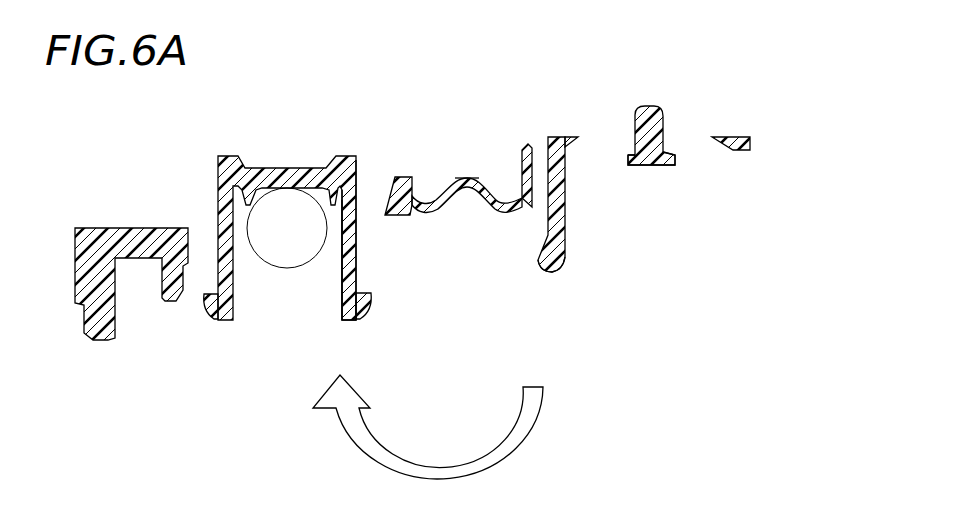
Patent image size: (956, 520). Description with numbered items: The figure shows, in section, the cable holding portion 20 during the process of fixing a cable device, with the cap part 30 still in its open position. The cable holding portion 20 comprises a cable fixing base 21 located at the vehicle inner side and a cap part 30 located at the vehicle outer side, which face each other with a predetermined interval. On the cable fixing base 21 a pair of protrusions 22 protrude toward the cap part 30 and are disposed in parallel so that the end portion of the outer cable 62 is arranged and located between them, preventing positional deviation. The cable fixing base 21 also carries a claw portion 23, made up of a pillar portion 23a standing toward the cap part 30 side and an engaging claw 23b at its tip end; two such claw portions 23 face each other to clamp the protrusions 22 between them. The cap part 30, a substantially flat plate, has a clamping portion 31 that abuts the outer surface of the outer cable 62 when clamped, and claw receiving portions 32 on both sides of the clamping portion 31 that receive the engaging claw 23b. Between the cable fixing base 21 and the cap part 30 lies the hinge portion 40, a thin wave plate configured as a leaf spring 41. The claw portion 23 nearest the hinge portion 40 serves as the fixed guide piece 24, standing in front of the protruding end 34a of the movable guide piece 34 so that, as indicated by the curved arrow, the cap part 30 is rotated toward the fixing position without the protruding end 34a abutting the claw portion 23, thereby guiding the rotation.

The cable holding portion 20 is at (403, 138).
The cable fixing base 21 is at (300, 168).
The pair of protrusions 22 is at (300, 172).
The claw portion 23 is at (478, 260).
The pillar portion 23a is at (217, 217).
The engaging claw 23b is at (207, 307).
The fixed guide piece 24 is at (339, 278).
The cap part 30 is at (663, 118).
The clamping portion 31 is at (652, 165).
The claw receiving portion 32 is at (597, 140).
The movable guide piece 34 is at (565, 215).
The protruding end 34a is at (550, 272).
The hinge portion 40 is at (478, 168).
The leaf spring 41 is at (462, 188).
The outer cable 62 is at (288, 298).